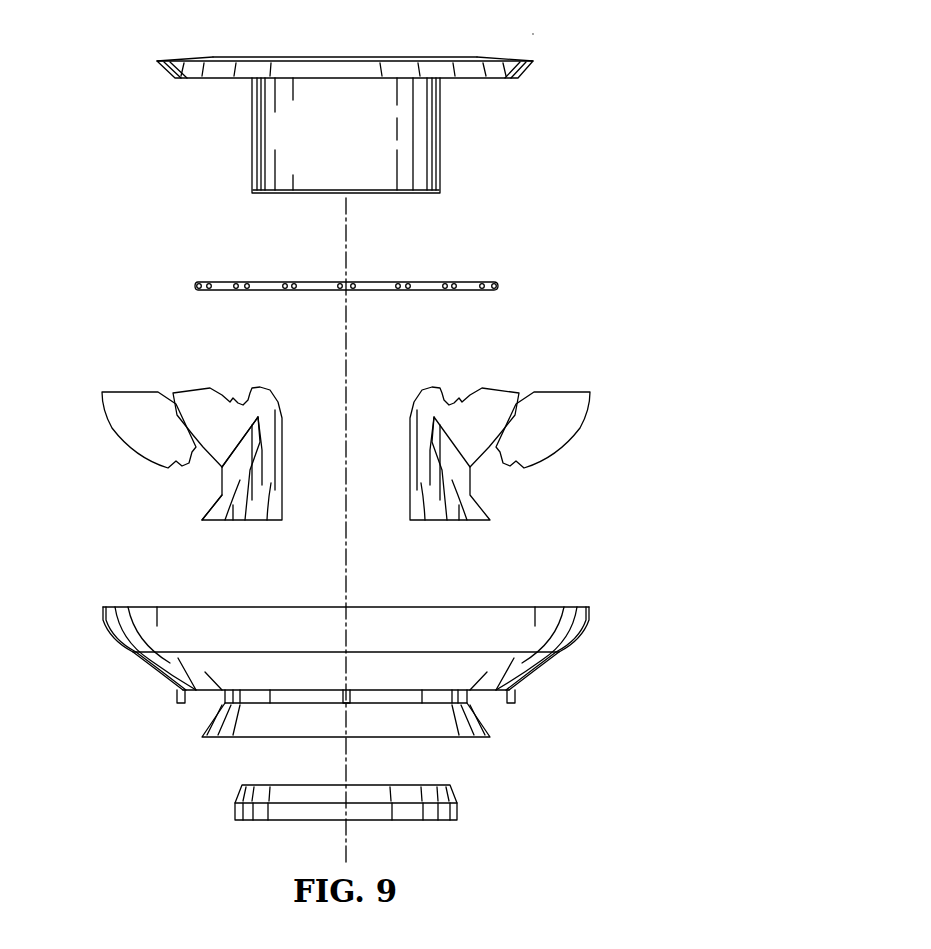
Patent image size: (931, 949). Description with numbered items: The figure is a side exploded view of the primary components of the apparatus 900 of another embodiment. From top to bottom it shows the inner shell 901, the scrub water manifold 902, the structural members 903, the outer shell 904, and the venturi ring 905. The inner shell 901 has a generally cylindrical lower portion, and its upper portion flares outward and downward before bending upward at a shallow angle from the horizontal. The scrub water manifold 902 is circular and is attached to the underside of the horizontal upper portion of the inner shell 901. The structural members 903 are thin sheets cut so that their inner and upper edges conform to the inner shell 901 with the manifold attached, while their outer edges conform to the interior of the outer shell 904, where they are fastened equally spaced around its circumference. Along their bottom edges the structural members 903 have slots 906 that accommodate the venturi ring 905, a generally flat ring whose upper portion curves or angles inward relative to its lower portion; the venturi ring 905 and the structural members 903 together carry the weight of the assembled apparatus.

The apparatus 900 is at (533, 34).
The inner shell 901 is at (531, 72).
The scrub water manifold 902 is at (500, 285).
The structural members 903 is at (563, 439).
The outer shell 904 is at (103, 620).
The venturi ring 905 is at (460, 810).
The slots 906 is at (222, 495).